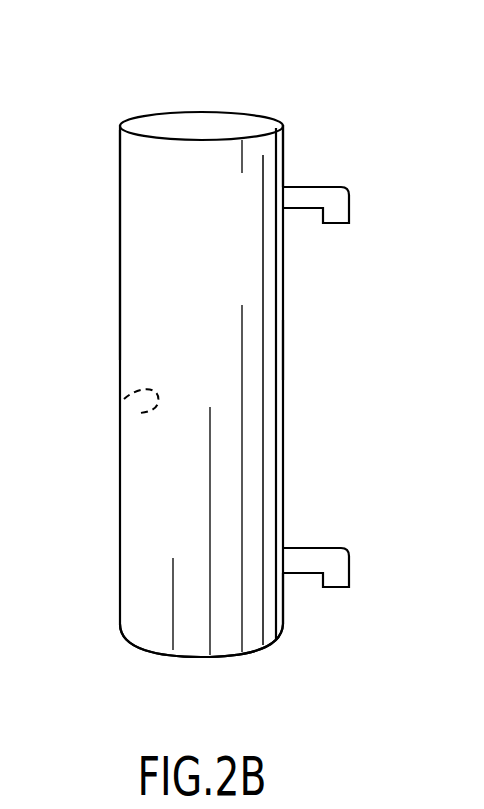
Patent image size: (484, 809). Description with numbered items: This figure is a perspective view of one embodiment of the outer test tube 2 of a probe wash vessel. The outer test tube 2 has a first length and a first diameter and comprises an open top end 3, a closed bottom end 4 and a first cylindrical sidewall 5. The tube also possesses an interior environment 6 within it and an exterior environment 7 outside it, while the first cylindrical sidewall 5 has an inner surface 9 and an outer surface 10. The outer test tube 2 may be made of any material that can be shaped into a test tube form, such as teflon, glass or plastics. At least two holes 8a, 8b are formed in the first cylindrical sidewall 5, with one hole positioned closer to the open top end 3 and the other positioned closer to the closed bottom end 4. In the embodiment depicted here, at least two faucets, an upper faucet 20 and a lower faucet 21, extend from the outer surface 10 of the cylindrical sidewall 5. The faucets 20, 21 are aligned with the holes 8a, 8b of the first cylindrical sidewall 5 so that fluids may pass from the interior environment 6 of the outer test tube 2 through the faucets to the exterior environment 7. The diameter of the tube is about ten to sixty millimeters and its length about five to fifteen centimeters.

The outer test tube 2 is at (96, 196).
The open top end 3 is at (209, 115).
The closed bottom end 4 is at (143, 663).
The first cylindrical sidewall 5 is at (115, 323).
The interior environment 6 is at (262, 280).
The exterior environment 7 is at (118, 252).
The hole 8a is at (278, 192).
The hole 8b is at (283, 573).
The inner surface 9 is at (141, 413).
The outer surface 10 is at (118, 490).
The upper faucet 20 is at (345, 195).
The lower faucet 21 is at (343, 557).